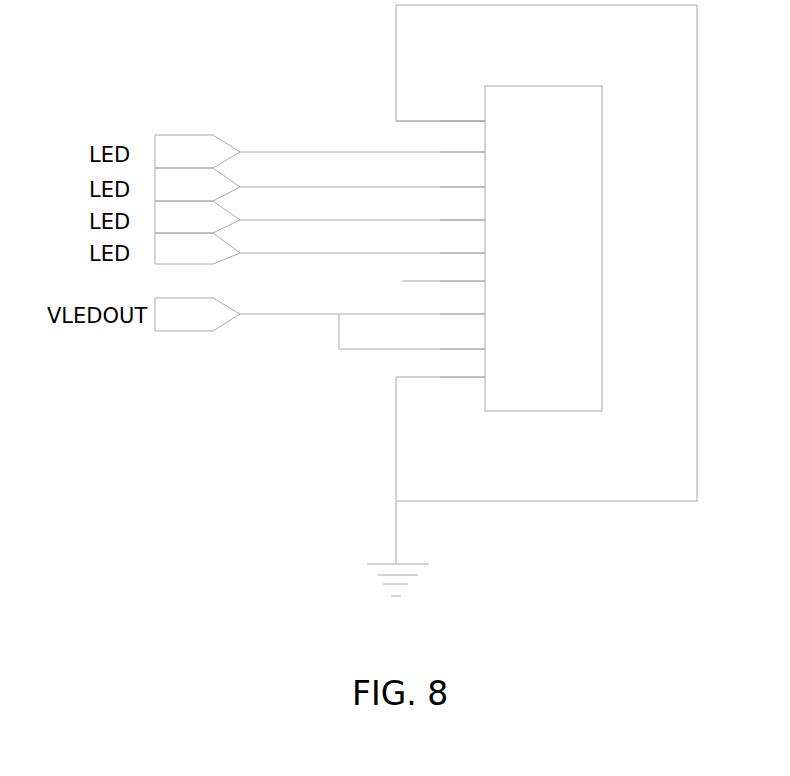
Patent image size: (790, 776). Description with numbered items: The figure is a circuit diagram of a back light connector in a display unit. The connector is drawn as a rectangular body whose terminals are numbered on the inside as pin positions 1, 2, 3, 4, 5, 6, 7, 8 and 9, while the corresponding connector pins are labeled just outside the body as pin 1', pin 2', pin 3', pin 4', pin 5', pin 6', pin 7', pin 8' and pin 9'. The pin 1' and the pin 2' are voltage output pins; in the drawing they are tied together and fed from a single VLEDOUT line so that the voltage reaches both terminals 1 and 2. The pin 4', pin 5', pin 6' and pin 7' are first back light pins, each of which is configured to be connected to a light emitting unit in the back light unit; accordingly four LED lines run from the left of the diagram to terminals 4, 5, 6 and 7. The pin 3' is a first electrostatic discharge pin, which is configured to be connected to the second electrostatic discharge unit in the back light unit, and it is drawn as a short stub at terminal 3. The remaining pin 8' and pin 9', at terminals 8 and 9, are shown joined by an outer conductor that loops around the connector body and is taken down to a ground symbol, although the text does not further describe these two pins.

The pin 1 of LED driver chip 1 is at (424, 339).
The pin 2 of LED driver chip 2 is at (374, 310).
The pin 3 of LED driver chip 3 is at (455, 276).
The pin 4 of LED driver chip 4 is at (374, 248).
The pin 5 of LED driver chip 5 is at (374, 216).
The pin 6 of LED driver chip 6 is at (374, 184).
The pin 7 of LED driver chip 7 is at (374, 149).
The pin 8 of LED driver chip 8 is at (452, 374).
The pin 9 of LED driver chip 9 is at (452, 117).
The pin 1' is at (462, 340).
The pin 2' is at (462, 305).
The first electrostatic discharge pin 3' is at (462, 270).
The first back light pin 4' is at (462, 243).
The first back light pin 5' is at (462, 210).
The first back light pin 6' is at (462, 176).
The first back light pin 7' is at (462, 143).
The connection wire to pin 8 8' is at (462, 368).
The connection wire to pin 9 9' is at (462, 110).